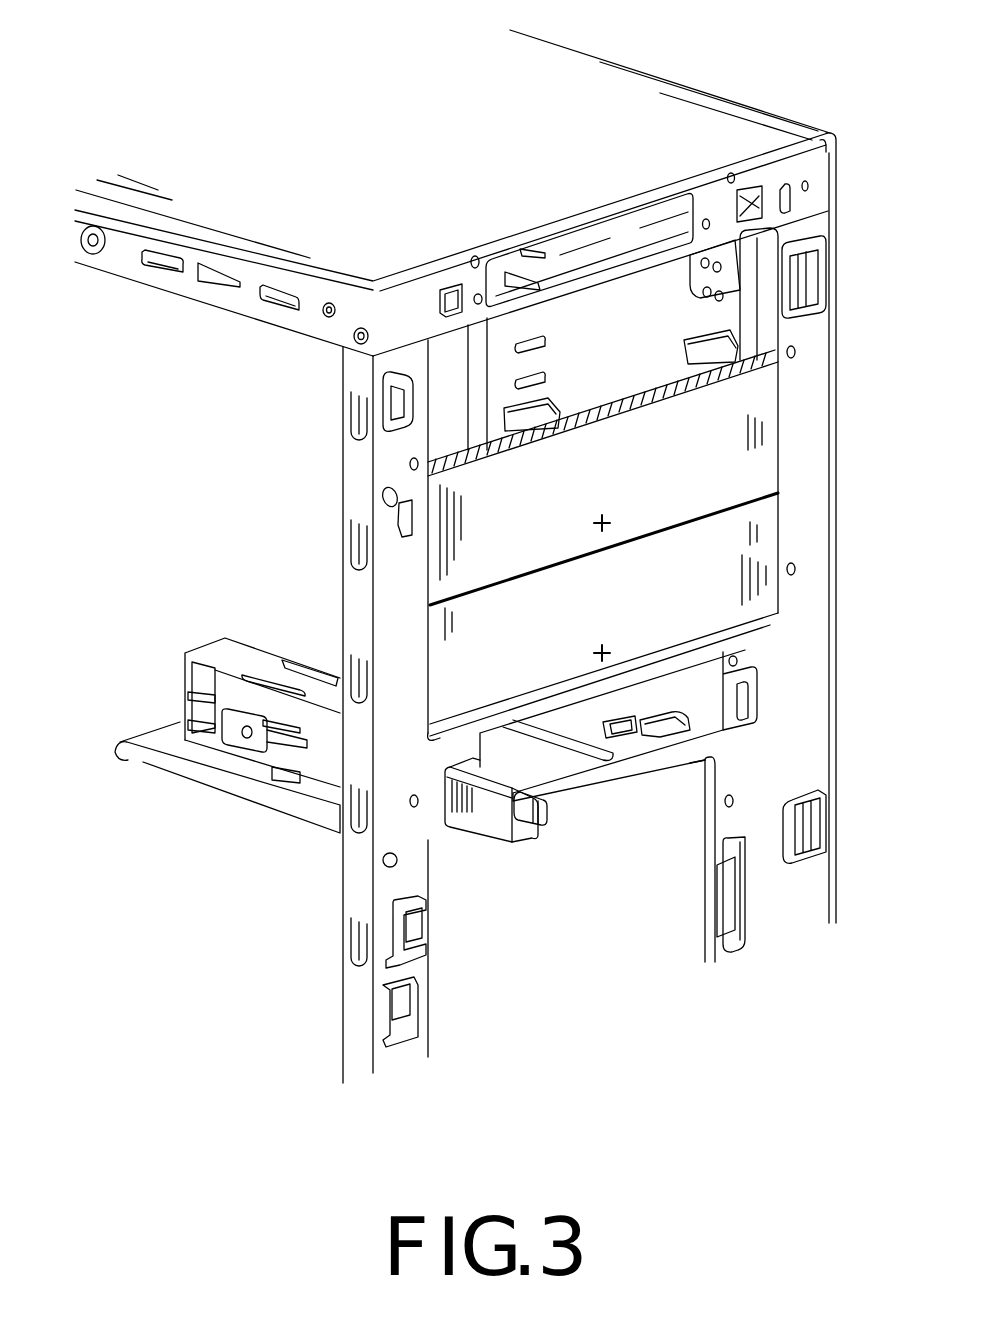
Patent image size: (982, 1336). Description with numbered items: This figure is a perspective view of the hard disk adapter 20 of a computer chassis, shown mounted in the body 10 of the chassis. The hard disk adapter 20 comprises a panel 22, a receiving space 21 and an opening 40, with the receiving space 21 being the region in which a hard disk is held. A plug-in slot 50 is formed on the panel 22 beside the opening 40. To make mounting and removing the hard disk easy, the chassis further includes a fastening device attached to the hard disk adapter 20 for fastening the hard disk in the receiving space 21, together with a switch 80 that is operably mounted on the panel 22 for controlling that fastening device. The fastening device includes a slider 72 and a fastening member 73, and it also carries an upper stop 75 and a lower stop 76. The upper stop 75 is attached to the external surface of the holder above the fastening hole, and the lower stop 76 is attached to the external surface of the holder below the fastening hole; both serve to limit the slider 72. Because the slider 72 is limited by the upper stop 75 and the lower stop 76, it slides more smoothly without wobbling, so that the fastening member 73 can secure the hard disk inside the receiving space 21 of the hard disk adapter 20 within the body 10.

The body 10 is at (617, 72).
The hard disk adapter 20 is at (633, 753).
The receiving space 21 is at (715, 718).
The panel 22 is at (687, 757).
The opening 40 is at (713, 718).
The plug-in slot 50 is at (752, 692).
The slider 72 is at (500, 840).
The fastening member 73 is at (280, 743).
The upper stop 75 is at (283, 720).
The lower stop 76 is at (283, 777).
The switch 80 is at (547, 812).